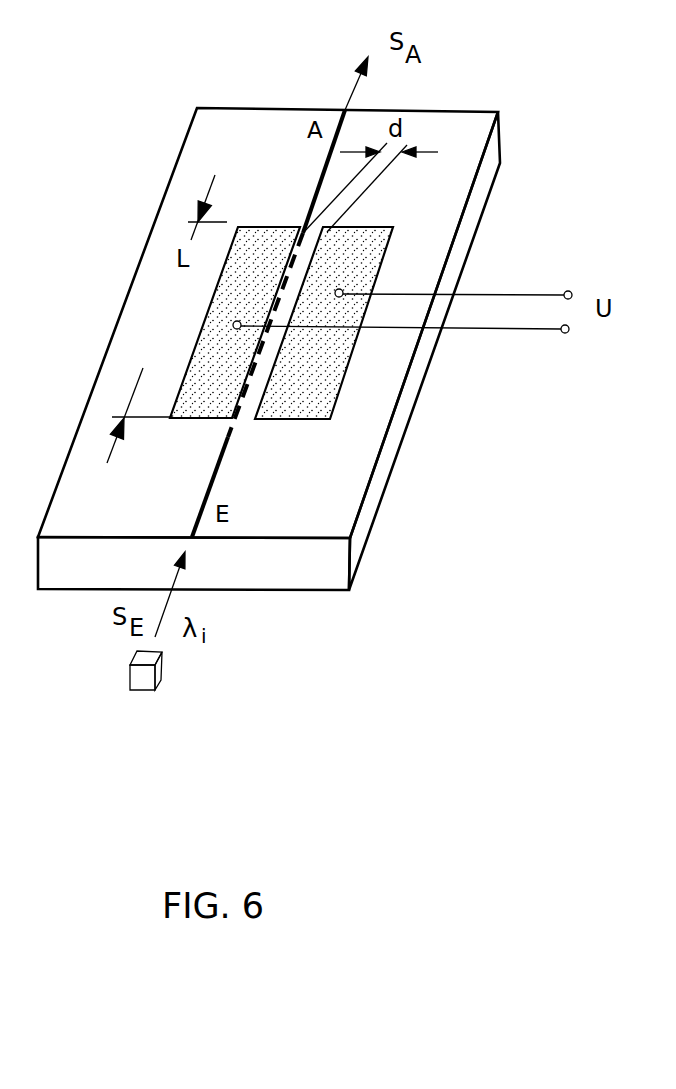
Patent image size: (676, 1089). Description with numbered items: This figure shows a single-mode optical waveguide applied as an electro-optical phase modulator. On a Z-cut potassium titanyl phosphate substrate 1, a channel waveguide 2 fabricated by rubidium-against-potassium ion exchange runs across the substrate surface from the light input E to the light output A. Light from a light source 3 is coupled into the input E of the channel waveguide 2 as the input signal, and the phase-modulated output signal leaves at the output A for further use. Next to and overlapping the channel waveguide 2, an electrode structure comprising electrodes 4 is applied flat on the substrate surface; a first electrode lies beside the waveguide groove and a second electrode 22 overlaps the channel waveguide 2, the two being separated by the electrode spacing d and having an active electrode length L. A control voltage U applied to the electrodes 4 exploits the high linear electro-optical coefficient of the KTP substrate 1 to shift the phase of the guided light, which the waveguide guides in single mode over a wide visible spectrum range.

The substrate 1 is at (493, 146).
The channel waveguide (SOWCW) 2 is at (313, 200).
The light source 3 is at (140, 683).
The electrodes 4 is at (250, 309).
The electrode 22 is at (380, 250).